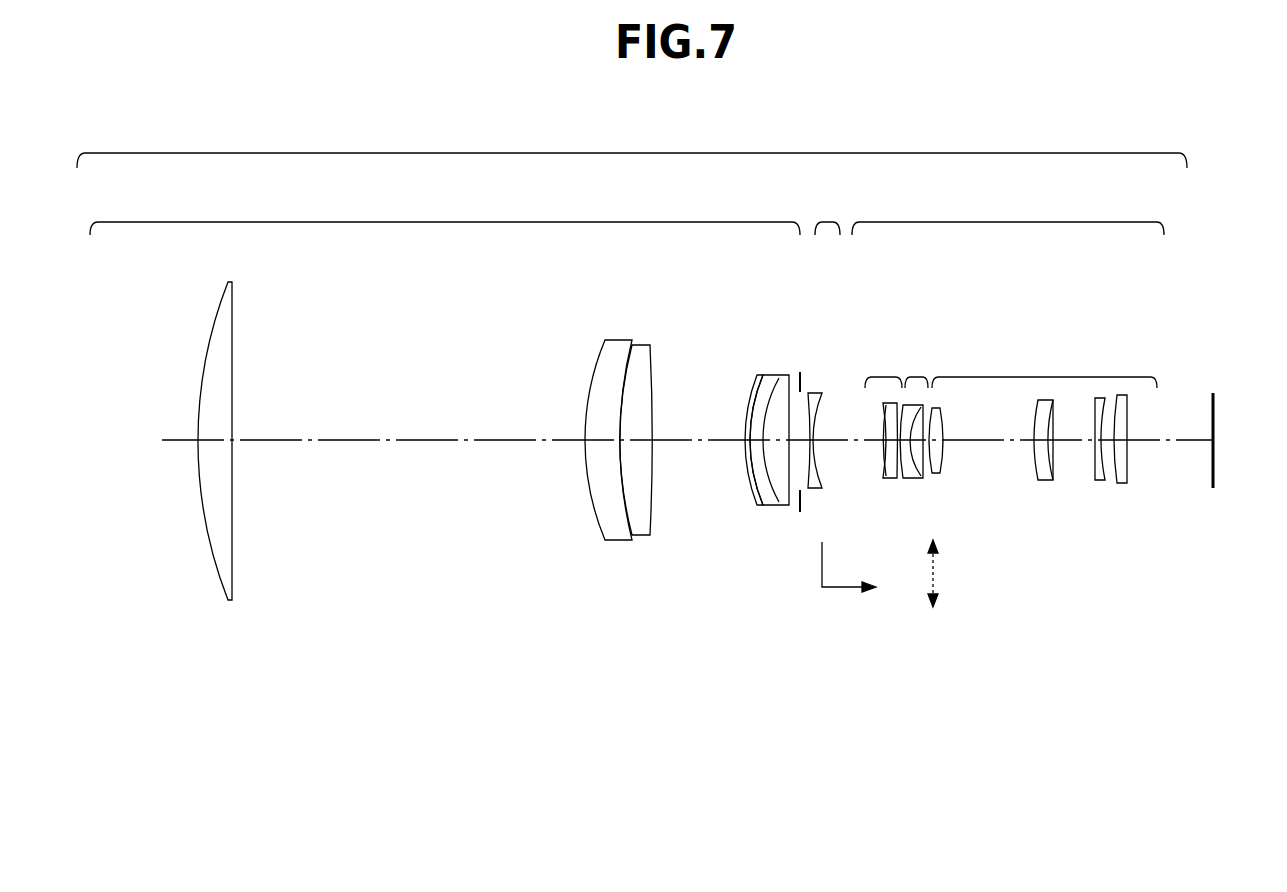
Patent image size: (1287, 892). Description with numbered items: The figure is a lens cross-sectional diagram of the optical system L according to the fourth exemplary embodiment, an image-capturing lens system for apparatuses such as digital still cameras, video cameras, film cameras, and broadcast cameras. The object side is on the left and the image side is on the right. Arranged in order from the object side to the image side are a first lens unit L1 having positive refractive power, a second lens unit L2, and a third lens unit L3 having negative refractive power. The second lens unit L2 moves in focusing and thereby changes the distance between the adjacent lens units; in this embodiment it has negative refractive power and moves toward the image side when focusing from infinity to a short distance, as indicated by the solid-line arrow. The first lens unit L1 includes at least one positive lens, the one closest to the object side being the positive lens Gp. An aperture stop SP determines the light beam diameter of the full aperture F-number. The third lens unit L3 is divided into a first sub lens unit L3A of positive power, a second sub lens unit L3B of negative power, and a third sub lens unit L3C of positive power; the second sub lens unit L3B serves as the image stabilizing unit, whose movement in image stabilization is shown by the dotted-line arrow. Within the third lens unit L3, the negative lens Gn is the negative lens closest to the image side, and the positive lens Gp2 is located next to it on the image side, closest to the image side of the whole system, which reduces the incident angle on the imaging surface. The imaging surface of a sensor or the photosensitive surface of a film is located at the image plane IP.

The optical system L is at (674, 387).
The first lens unit L1 is at (445, 422).
The second lens unit L2 is at (842, 392).
The third lens unit L3 is at (1014, 400).
The first sub lens unit L3A is at (890, 413).
The second sub lens unit L3B is at (917, 372).
The third sub lens unit L3C is at (1054, 452).
The positive lens Gp is at (215, 565).
The negative lens Gn is at (1098, 482).
The positive lens Gp2 is at (1125, 485).
The aperture stop SP is at (800, 500).
The image plane IP is at (1216, 468).